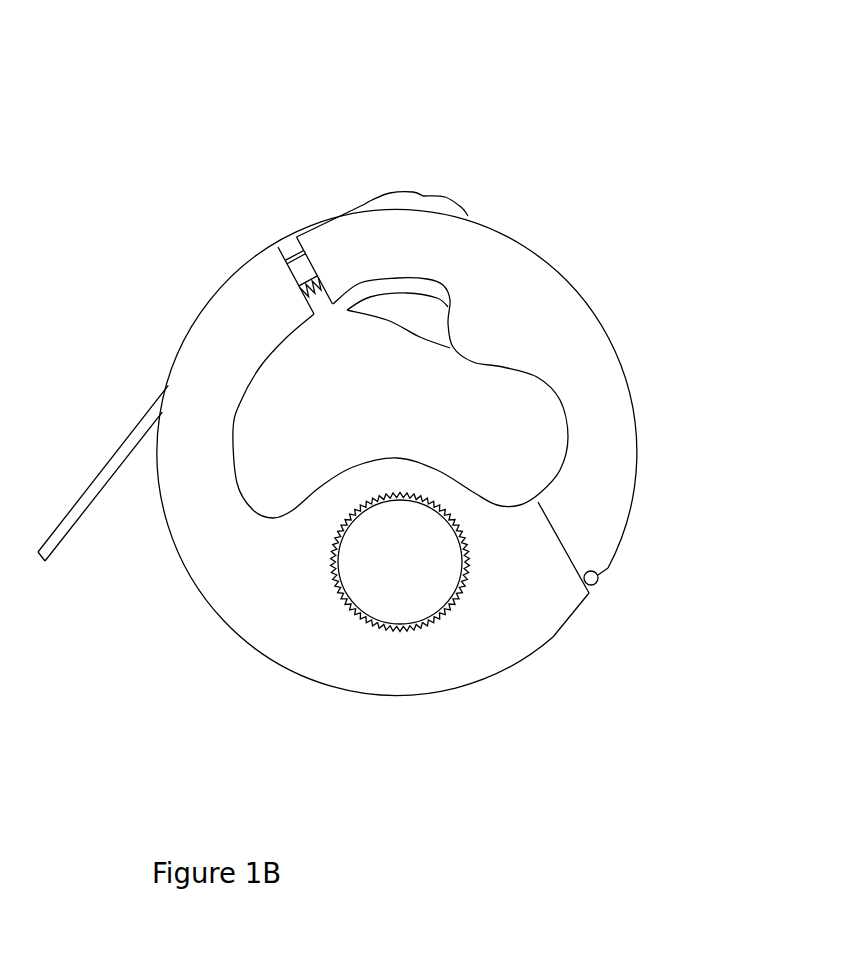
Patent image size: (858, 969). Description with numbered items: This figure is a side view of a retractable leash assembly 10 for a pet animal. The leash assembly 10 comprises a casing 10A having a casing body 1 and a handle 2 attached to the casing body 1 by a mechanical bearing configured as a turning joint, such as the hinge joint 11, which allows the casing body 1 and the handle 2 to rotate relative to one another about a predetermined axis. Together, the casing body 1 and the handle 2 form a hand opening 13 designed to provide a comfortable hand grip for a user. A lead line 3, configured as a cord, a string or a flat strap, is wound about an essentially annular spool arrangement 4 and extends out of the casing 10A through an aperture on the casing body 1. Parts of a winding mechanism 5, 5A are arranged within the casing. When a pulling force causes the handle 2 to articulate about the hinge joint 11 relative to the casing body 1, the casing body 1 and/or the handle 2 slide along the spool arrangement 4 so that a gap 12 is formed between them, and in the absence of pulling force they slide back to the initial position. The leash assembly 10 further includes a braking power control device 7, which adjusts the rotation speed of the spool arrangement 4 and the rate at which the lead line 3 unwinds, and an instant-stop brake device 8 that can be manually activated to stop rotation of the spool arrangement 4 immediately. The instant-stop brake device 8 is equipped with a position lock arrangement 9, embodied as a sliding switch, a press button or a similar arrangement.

The casing body 1 is at (507, 640).
The handle 2 is at (570, 320).
The lead line 3 is at (103, 482).
The spool arrangement 4 is at (318, 321).
The winding mechanism 5 is at (330, 631).
The winding mechanism part 5A is at (395, 598).
The braking power control device 7 is at (413, 312).
The instant-stop brake device 8 is at (447, 198).
The position lock arrangement 9 is at (393, 192).
The leash assembly 10 is at (713, 57).
The casing 10A is at (668, 403).
The hinge joint 11 is at (597, 576).
The gap 12 is at (293, 227).
The hand opening 13 is at (310, 392).